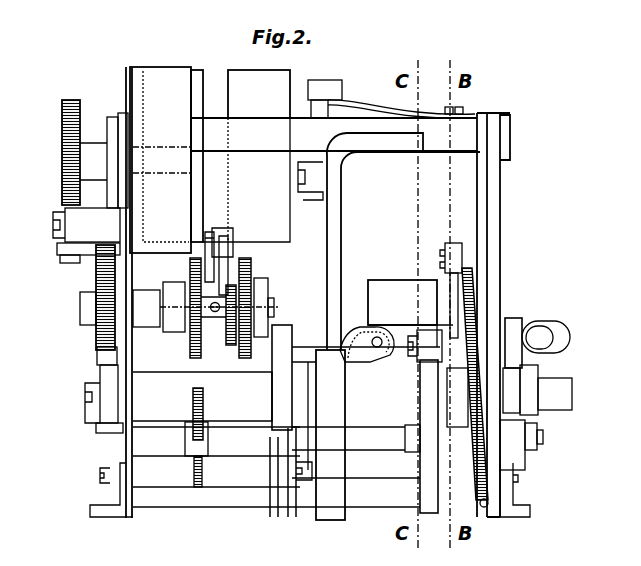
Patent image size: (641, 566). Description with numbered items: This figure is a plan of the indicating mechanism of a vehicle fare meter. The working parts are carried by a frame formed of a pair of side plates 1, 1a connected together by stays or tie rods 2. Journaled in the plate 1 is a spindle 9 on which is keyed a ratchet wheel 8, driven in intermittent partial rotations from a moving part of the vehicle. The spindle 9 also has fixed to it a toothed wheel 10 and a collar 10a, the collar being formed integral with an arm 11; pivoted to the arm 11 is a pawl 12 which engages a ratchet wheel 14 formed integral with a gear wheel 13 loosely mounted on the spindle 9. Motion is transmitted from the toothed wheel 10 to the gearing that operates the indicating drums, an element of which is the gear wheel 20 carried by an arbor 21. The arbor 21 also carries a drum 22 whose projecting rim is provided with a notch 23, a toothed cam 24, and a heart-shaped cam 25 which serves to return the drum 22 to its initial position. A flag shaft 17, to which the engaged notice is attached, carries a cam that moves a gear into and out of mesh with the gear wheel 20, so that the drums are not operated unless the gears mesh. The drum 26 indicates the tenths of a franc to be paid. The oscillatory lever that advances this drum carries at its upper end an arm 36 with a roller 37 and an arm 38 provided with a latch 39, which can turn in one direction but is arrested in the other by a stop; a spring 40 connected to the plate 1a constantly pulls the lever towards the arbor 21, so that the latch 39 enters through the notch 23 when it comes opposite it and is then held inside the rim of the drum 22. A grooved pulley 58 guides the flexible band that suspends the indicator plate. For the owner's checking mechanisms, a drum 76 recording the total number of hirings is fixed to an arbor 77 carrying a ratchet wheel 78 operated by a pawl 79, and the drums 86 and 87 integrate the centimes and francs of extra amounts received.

The side plate 1 is at (130, 350).
The side plate 1a is at (495, 260).
The stays or tie rods 2 is at (195, 517).
The ratchet wheel 8 is at (105, 270).
The spindle 9 is at (298, 316).
The toothed wheel 10 is at (190, 337).
The collar 10a is at (202, 348).
The arm 11 is at (213, 287).
The pawl 12 is at (230, 256).
The gear wheel 13 is at (251, 272).
The ratchet wheel 14 is at (233, 335).
The flag shaft 17 is at (568, 377).
The gear wheel 20 is at (192, 410).
The arbor 21 is at (140, 440).
The drum 22 is at (325, 370).
The notch 23 is at (326, 435).
The toothed cam 24 is at (418, 433).
The heart-shaped cam 25 is at (517, 456).
The drum 26 is at (410, 313).
The arm 36 is at (465, 340).
The roller 37 is at (430, 342).
The arm 38 is at (412, 352).
The latch 39 is at (358, 340).
The spring 40 is at (472, 300).
The grooved pulley 58 is at (278, 497).
The drum 76 is at (165, 85).
The arbor 77 is at (160, 146).
The ratchet wheel 78 is at (62, 133).
The pawl 79 is at (70, 223).
The drum 86 is at (198, 82).
The drum 87 is at (246, 156).